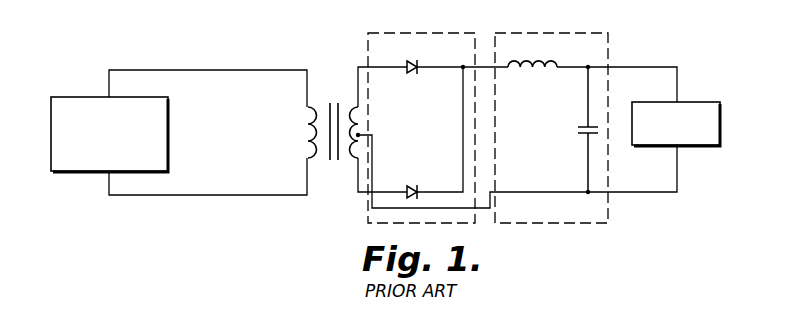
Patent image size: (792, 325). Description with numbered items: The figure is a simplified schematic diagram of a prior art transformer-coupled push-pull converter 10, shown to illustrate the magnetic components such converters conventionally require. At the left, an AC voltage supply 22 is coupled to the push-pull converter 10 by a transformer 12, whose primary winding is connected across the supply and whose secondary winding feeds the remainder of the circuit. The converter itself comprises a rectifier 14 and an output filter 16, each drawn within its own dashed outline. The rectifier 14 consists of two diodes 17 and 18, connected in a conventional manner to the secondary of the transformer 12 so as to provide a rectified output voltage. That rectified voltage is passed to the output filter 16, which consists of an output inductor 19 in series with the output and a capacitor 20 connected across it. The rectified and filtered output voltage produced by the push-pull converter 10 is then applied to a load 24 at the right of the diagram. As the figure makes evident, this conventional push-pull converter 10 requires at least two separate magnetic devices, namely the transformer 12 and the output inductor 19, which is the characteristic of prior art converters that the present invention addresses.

The push-pull converter 10 is at (357, 229).
The transformer 12 is at (332, 82).
The rectifier 14 is at (398, 33).
The output filter 16 is at (553, 33).
The diode 17 is at (410, 74).
The diode 18 is at (409, 188).
The output inductor 19 is at (531, 69).
The capacitor 20 is at (578, 133).
The AC voltage supply 22 is at (75, 97).
The load 24 is at (700, 102).